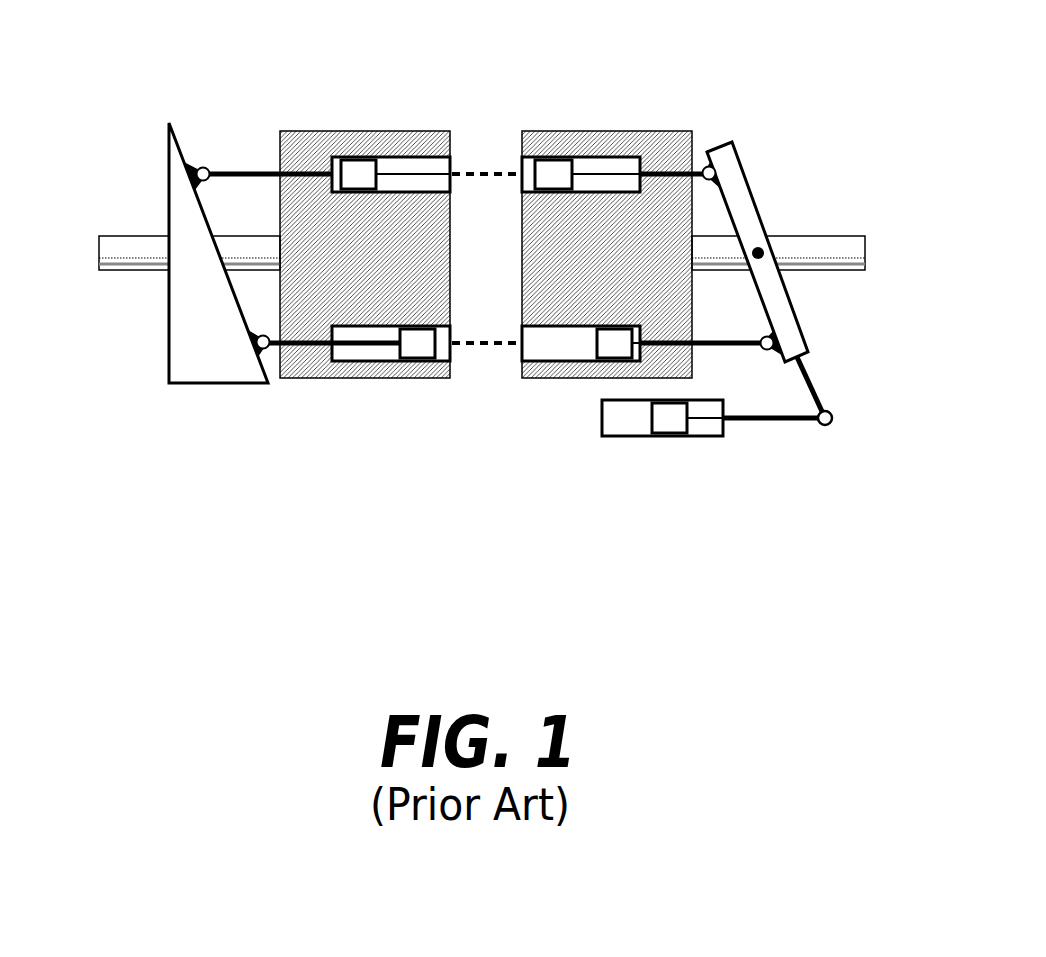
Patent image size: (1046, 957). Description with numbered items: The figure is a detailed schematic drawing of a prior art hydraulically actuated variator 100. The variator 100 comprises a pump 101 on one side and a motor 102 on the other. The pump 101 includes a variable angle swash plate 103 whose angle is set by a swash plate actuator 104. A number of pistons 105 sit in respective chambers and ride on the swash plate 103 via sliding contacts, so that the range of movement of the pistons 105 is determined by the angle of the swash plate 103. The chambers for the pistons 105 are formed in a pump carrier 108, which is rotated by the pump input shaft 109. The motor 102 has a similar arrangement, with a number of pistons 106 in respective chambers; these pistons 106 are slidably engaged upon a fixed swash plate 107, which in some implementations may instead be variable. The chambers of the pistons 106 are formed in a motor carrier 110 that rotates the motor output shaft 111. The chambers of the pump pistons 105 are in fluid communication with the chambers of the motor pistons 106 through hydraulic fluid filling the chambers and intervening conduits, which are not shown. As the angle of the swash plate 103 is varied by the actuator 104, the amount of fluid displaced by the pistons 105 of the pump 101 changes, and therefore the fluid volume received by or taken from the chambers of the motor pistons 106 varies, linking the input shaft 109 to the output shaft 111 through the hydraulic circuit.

The hydraulically actuated variator 100 is at (565, 570).
The pump 101 is at (812, 112).
The motor 102 is at (468, 115).
The variable angle swash plate 103 is at (778, 305).
The swash plate actuator 104 is at (677, 437).
The pistons 105 is at (607, 254).
The pistons 106 is at (365, 254).
The fixed swash plate 107 is at (228, 384).
The pump carrier 108 is at (548, 379).
The pump input shaft 109 is at (840, 250).
The motor carrier 110 is at (412, 379).
The motor output shaft 111 is at (112, 245).